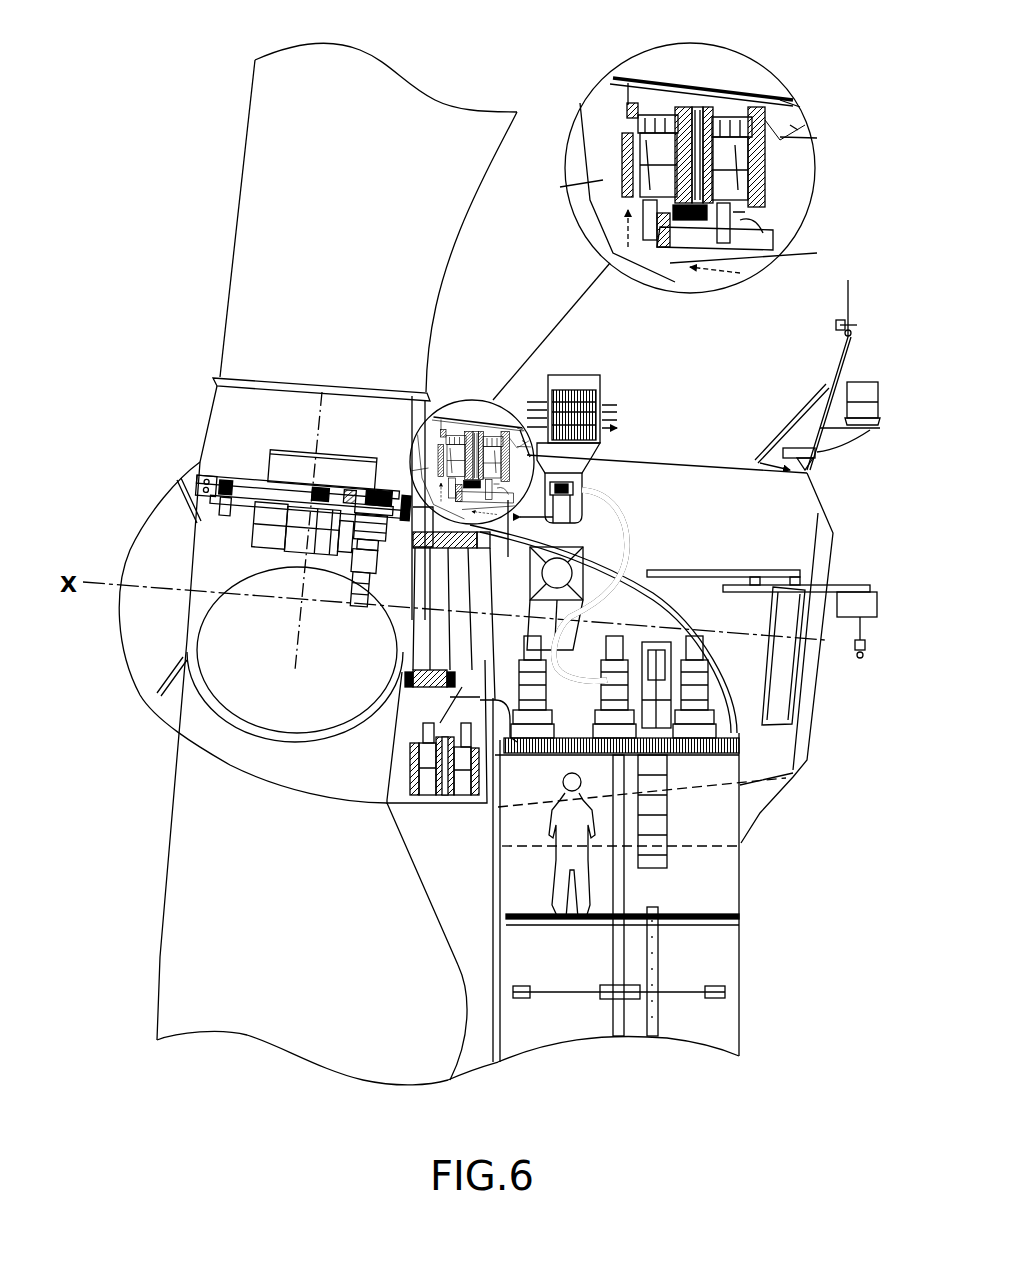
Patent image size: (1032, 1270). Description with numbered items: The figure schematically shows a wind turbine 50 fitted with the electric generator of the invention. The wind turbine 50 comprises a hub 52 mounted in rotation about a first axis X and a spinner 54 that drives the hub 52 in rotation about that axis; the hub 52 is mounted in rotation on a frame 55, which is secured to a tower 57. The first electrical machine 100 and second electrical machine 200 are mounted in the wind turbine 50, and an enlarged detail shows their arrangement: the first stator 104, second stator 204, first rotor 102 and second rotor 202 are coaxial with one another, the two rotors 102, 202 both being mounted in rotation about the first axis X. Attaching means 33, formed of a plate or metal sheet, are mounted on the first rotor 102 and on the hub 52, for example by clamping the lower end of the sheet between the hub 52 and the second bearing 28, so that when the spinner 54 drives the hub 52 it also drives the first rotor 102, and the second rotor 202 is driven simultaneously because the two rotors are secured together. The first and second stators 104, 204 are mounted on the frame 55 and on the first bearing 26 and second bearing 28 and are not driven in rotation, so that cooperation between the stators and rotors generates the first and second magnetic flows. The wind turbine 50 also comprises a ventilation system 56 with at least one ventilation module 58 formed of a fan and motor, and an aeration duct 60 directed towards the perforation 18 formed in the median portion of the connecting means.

The wind turbine 50 is at (135, 97).
The hub 52 is at (158, 528).
The spinner 54 is at (258, 218).
The frame 55 is at (633, 567).
The ventilation system 56 is at (615, 410).
The tower 57 is at (741, 1027).
The ventilation module 58 is at (595, 468).
The aeration duct 60 is at (598, 532).
The attaching means 33 is at (410, 503).
The second bearing 28 is at (470, 547).
The perforation 18 is at (660, 280).
The first bearing 26 is at (770, 240).
The first electrical machine 100 is at (665, 100).
The first rotor 102 is at (675, 115).
The first stator 104 is at (653, 157).
The second electrical machine 200 is at (738, 112).
The second rotor 202 is at (747, 120).
The second stator 204 is at (740, 158).